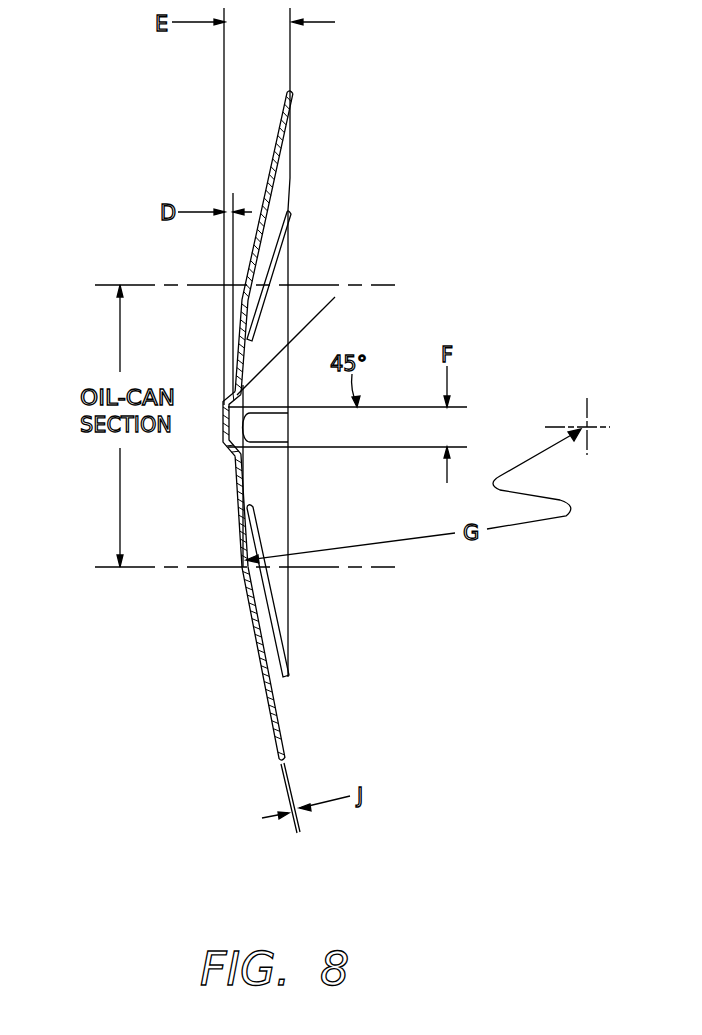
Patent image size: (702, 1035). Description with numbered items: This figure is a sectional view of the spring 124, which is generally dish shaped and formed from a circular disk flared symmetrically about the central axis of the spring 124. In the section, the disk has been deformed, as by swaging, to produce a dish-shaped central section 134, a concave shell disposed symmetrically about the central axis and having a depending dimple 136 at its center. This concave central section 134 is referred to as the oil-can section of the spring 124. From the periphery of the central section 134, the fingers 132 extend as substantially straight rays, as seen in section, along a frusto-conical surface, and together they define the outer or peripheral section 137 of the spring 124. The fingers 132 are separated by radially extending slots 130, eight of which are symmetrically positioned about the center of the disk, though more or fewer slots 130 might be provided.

The spring 124 is at (258, 663).
The slots 130 is at (288, 195).
The fingers 132 is at (292, 156).
The central section 134 is at (237, 497).
The dimple 136 is at (222, 406).
The peripheral section 137 is at (274, 612).